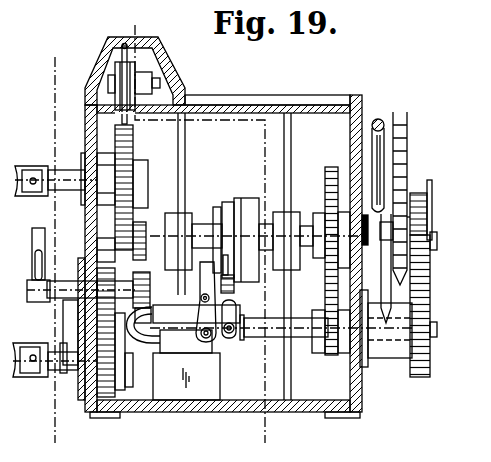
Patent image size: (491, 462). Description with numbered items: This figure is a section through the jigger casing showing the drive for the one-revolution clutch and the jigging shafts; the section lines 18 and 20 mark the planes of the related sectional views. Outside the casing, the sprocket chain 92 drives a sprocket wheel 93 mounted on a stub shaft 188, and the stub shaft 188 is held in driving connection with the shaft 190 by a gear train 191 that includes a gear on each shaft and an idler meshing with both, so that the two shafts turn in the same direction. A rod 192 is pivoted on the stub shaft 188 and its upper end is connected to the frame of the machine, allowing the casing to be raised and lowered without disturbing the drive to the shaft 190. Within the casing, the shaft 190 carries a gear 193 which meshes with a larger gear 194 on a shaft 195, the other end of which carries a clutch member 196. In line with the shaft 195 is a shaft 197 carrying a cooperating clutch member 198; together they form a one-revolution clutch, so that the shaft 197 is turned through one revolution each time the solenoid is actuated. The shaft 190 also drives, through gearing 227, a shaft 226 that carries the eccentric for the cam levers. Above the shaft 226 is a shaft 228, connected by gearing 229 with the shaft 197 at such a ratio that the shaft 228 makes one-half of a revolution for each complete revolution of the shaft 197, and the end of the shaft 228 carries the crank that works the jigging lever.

The section line 18— 18 is at (102, 25).
The section line 20— 20 is at (25, 57).
The shaft 228 is at (58, 180).
The gearing 229 is at (122, 162).
The shaft 197 is at (153, 228).
The clutch member 198 is at (225, 203).
The clutch member 196 is at (245, 203).
The shaft 195 is at (318, 228).
The gear 194 is at (333, 175).
The shaft 190 is at (290, 326).
The shaft 226 is at (28, 350).
The gearing 227 is at (108, 395).
The gear 193 is at (336, 350).
The sprocket wheel 93 is at (403, 306).
The rod 192 is at (378, 120).
The sprocket chain 92 is at (403, 140).
The stub shaft 188 is at (423, 208).
The gear train 191 is at (418, 378).